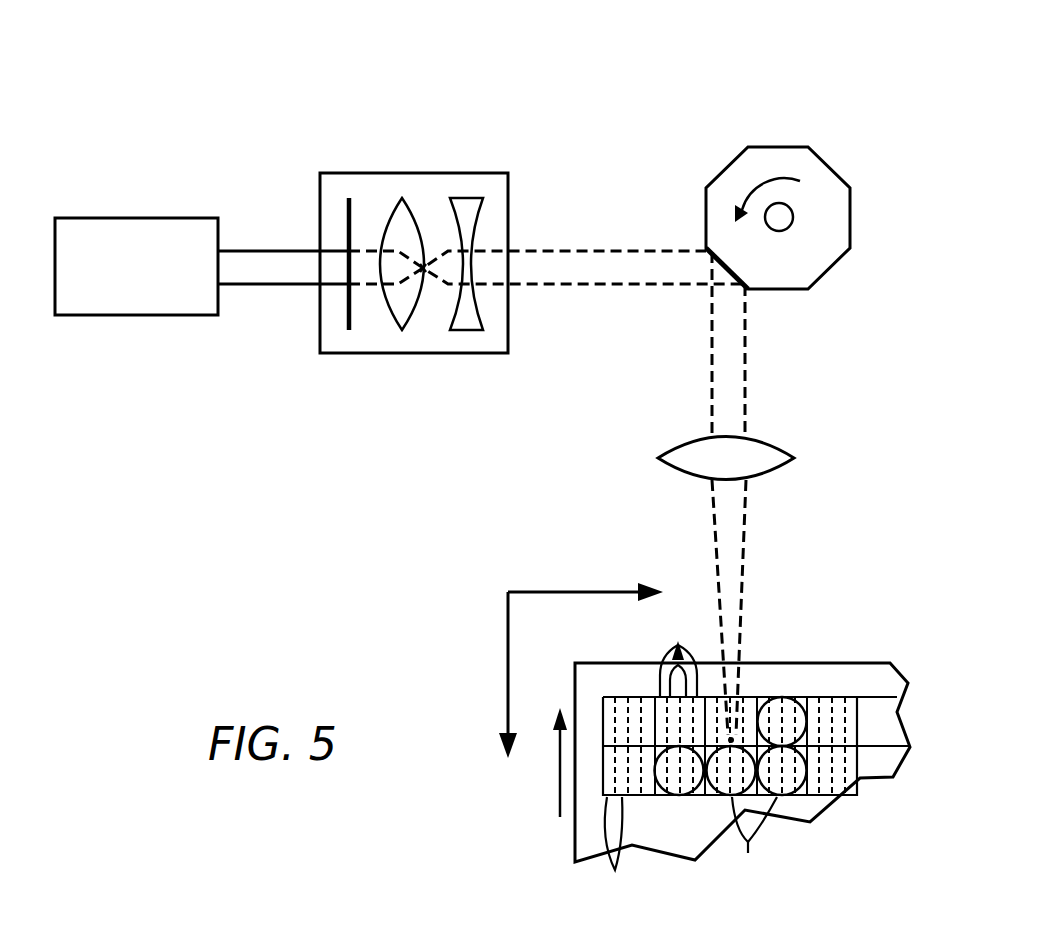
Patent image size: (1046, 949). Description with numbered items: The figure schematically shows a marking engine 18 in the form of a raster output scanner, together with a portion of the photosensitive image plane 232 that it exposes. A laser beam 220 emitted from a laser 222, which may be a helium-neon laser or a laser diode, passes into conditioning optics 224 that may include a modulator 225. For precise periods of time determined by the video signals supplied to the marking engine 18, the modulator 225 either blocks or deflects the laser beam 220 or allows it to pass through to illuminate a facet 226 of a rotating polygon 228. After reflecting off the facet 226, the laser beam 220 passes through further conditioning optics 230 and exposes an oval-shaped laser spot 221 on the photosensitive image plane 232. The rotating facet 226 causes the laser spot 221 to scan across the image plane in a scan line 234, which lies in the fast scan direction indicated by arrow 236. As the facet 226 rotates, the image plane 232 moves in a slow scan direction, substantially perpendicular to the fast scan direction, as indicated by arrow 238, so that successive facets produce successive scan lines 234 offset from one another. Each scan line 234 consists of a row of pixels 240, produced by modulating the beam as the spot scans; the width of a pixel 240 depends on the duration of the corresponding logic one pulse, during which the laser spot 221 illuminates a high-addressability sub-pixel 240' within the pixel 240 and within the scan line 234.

The marking engine 18 is at (562, 80).
The laser beam 220 is at (267, 251).
The laser spot 221 is at (742, 735).
The laser 222 is at (138, 218).
The conditioning optics 224 is at (412, 173).
The modulator 225 is at (352, 313).
The facet 226 is at (730, 267).
The rotating polygon 228 is at (778, 147).
The conditioning optics 230 is at (763, 450).
The photosensitive image plane 232 is at (825, 663).
The scan line 234 is at (808, 720).
The arrow 236 is at (565, 592).
The arrow 238 is at (508, 667).
The pixel 240 is at (656, 750).
The high-addressability sub-pixel 240' is at (650, 758).